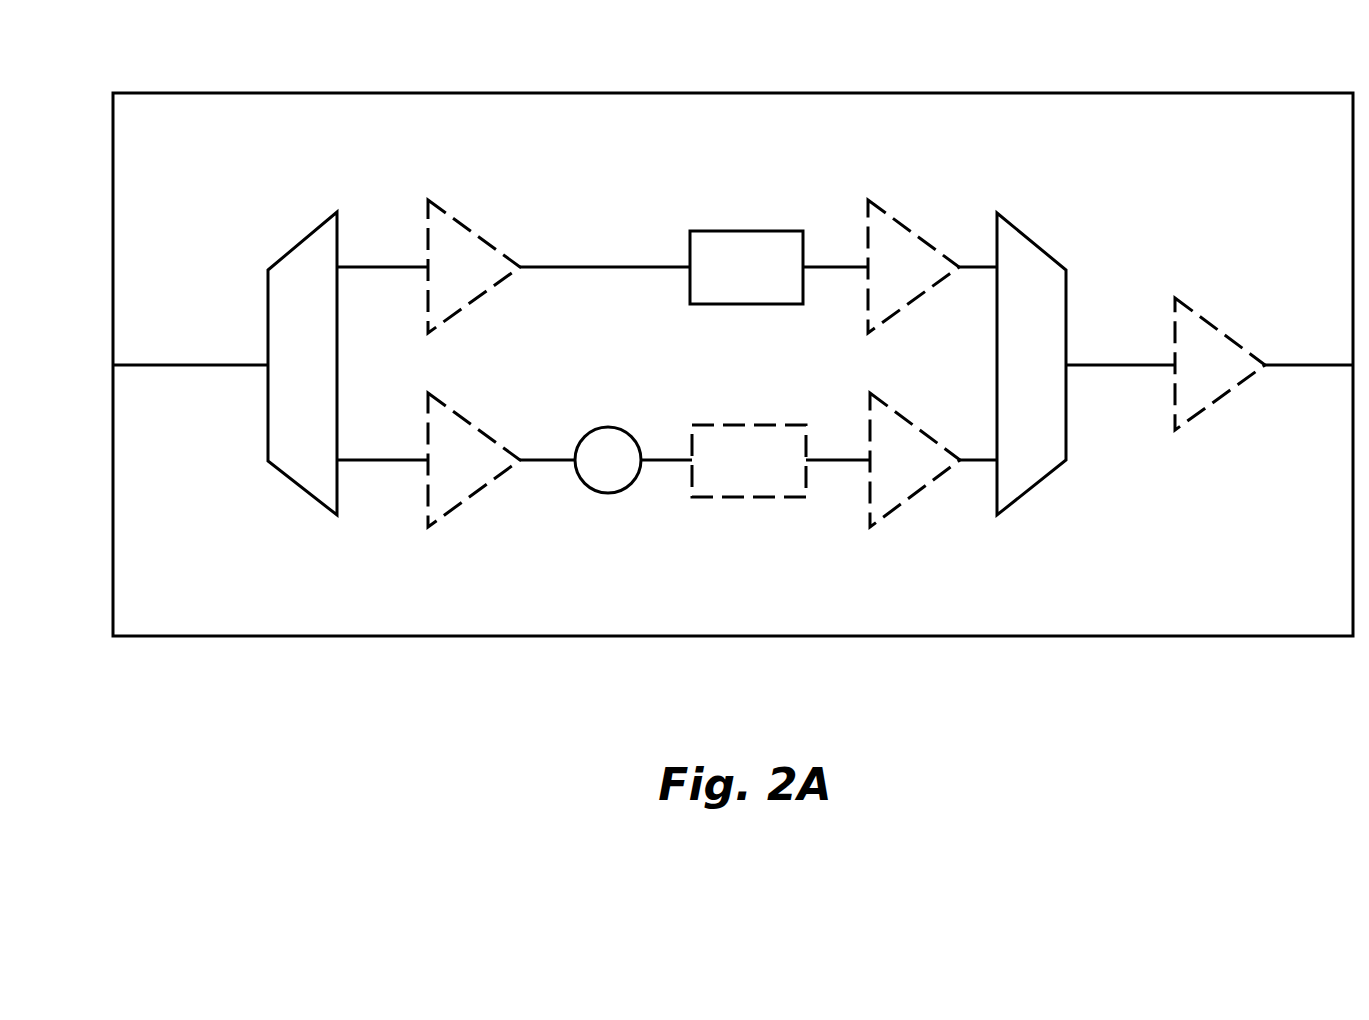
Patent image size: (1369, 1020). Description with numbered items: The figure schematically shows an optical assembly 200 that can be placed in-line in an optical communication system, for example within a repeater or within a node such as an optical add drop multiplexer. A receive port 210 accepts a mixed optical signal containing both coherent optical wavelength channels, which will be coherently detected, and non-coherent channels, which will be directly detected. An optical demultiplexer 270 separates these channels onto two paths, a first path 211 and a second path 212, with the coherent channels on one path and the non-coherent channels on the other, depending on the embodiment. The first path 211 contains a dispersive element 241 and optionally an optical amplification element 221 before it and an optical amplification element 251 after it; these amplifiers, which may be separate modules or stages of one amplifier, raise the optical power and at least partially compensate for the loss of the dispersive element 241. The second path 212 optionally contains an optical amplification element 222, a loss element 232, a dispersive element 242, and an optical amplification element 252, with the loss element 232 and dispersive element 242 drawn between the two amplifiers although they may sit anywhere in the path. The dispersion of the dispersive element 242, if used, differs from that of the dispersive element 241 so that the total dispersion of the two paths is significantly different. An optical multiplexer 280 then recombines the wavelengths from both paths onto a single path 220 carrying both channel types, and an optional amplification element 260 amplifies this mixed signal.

The optical assembly 200 is at (733, 43).
The receive port 210 is at (233, 367).
The optical demultiplexer 270 is at (302, 241).
The path 211 is at (383, 266).
The path 212 is at (383, 462).
The optical amplification element 221 is at (478, 232).
The optical amplification element 222 is at (490, 490).
The loss element 232 is at (618, 492).
The dispersive element 241 is at (714, 230).
The dispersive element 242 is at (752, 497).
The optical amplification element 251 is at (915, 232).
The optical amplification element 252 is at (918, 492).
The optical multiplexer 280 is at (1030, 240).
The path 220 is at (1118, 368).
The amplification element 260 is at (1220, 395).